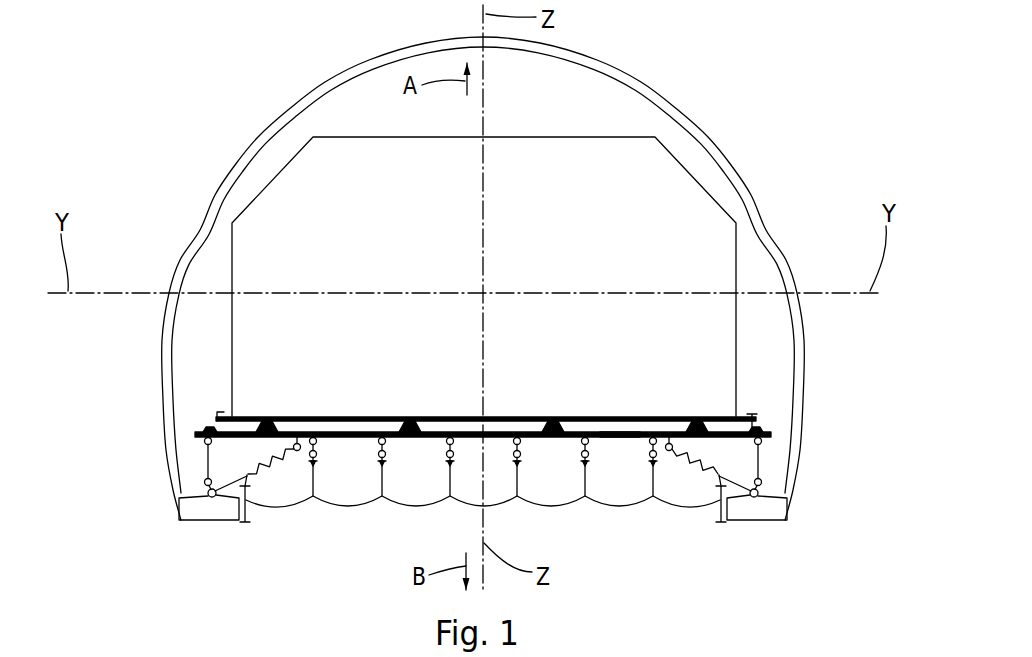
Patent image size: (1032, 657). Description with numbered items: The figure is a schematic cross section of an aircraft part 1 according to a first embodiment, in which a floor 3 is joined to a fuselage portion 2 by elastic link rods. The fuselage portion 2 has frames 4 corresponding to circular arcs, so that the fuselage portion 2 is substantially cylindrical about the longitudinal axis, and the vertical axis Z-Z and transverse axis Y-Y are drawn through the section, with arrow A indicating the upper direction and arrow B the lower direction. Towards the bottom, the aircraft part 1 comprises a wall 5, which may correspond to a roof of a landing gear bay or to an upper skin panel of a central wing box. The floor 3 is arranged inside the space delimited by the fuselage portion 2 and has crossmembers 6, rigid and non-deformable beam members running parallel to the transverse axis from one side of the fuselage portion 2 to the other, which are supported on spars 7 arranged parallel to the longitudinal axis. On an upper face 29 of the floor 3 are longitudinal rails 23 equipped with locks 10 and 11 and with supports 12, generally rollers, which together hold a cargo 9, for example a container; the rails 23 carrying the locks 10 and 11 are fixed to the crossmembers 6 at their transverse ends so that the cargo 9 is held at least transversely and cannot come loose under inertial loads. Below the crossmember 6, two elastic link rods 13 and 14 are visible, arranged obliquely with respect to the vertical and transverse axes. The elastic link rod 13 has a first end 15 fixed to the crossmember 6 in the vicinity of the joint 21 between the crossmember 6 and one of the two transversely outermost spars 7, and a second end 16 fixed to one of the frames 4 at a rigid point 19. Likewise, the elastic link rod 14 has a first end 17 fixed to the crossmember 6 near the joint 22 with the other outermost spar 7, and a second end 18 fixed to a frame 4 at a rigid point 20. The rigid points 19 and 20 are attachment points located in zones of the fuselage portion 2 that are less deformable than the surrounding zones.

The aircraft part 1 is at (857, 106).
The fuselage portion 2 is at (838, 207).
The floor 3 is at (776, 425).
The frames 4 is at (788, 262).
The wall 5 is at (401, 514).
The crossmembers 6 is at (617, 438).
The spars 7 is at (309, 484).
The cargo 9 is at (688, 168).
The lock 10 is at (753, 416).
The lock 11 is at (216, 416).
The supports 12 is at (690, 421).
The elastic link rod 13 is at (723, 461).
The elastic link rod 14 is at (292, 450).
The first end 15 is at (762, 447).
The second end 16 is at (758, 495).
The first end 17 is at (242, 464).
The second end 18 is at (208, 497).
The rigid point 19 is at (757, 507).
The rigid point 20 is at (211, 507).
The joint 21 is at (669, 451).
The joint 22 is at (280, 504).
The rails 23 is at (198, 434).
The upper face 29 is at (636, 413).